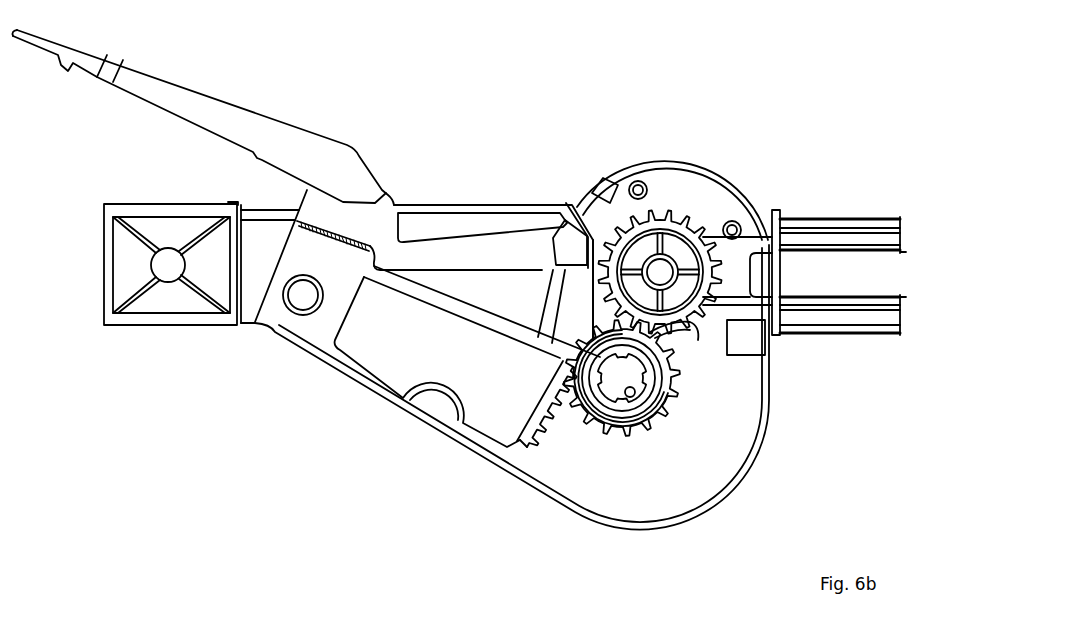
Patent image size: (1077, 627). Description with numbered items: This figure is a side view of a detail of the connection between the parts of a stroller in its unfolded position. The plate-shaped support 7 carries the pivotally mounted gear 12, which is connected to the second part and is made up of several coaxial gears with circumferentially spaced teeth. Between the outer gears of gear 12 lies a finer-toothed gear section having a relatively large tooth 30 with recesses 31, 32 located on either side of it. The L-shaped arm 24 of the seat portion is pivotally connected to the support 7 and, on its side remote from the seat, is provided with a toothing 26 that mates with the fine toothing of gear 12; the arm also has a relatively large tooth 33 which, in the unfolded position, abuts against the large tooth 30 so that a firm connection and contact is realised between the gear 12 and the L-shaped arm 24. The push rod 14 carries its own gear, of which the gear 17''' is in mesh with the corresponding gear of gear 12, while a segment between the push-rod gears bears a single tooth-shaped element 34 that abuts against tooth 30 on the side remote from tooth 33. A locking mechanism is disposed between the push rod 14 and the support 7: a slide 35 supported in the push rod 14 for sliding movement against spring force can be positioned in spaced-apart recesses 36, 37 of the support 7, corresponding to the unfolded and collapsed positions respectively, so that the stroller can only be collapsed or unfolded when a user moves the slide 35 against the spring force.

The plate-shaped support 7 is at (497, 245).
The gear 12 is at (613, 433).
The push rod 14 is at (828, 232).
The gear 17''' is at (660, 227).
The L-shaped arm 24 is at (365, 345).
The toothing 26 is at (520, 440).
The relatively large tooth 30 is at (597, 232).
The recess 31 is at (590, 400).
The recess 32 is at (662, 352).
The relatively large tooth 33 is at (570, 366).
The tooth-shaped element 34 is at (688, 320).
The slide 35 is at (763, 267).
The recess 36 is at (757, 252).
The recess 37 is at (603, 192).